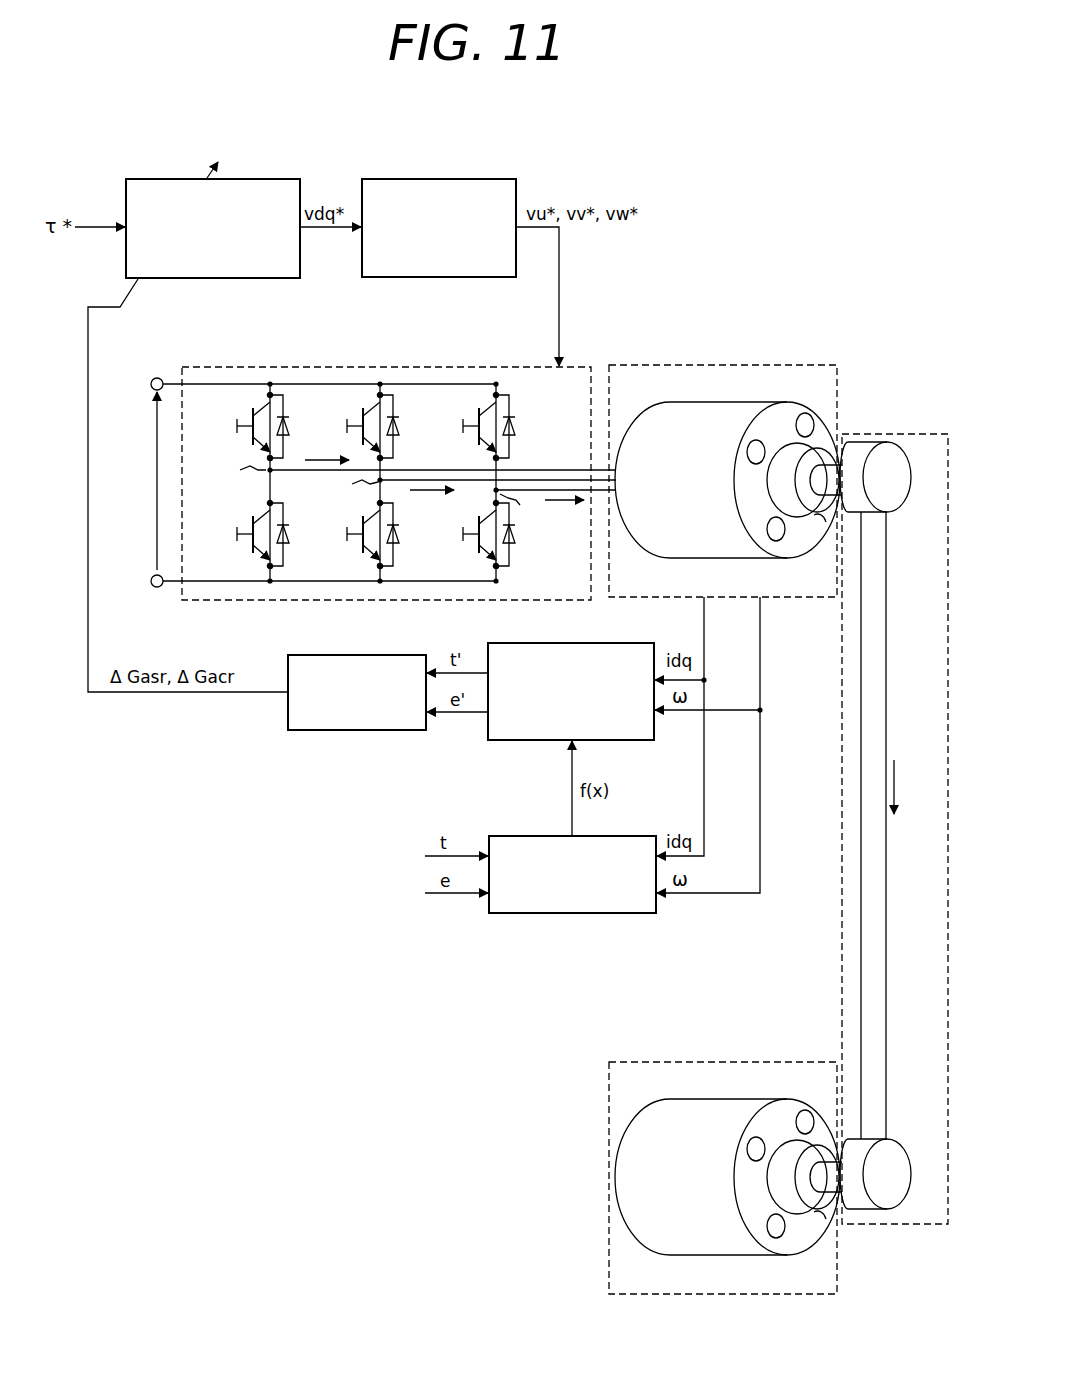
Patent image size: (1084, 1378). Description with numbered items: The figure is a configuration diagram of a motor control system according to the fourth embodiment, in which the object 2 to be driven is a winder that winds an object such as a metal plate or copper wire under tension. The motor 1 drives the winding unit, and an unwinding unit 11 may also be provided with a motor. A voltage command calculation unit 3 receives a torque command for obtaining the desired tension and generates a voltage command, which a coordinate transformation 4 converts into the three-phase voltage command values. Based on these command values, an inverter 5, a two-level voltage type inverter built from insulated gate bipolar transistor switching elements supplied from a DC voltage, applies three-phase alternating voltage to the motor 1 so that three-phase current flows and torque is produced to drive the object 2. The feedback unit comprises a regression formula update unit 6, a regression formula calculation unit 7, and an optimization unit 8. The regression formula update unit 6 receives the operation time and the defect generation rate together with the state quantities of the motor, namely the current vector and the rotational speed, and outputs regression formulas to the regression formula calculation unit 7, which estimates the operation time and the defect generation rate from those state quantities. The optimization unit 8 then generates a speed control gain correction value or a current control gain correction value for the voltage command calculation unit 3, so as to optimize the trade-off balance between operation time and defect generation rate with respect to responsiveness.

The motor 1 is at (697, 365).
The object to be driven 2 is at (913, 434).
The voltage command calculation unit 3 is at (250, 179).
The coordinate transformation 4 is at (445, 179).
The inverter 5 is at (418, 367).
The regression formula update unit 6 is at (612, 913).
The regression formula calculation unit 7 is at (605, 643).
The optimization unit 8 is at (368, 655).
The unwinding unit 11 is at (718, 1062).